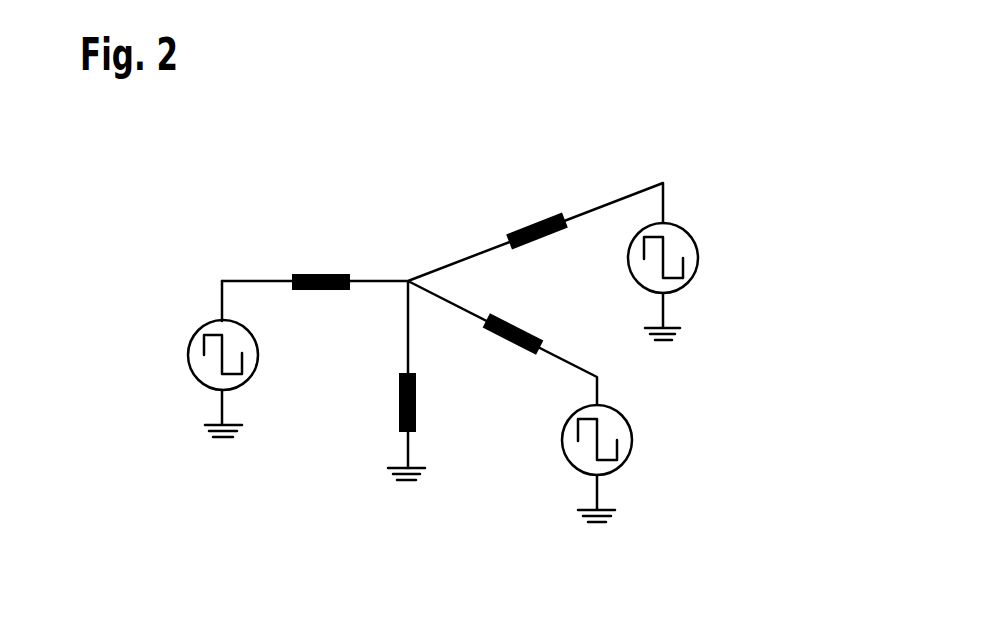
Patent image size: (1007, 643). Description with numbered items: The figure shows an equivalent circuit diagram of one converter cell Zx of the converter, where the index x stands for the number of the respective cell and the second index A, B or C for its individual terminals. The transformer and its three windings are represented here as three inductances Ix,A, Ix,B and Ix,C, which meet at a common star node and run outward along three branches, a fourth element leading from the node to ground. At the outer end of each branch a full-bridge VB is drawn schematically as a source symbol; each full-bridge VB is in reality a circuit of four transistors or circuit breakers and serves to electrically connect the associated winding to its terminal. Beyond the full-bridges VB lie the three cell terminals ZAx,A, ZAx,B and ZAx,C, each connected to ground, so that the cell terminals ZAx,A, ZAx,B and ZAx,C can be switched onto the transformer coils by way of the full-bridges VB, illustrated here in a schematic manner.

The converter cell Zx is at (699, 148).
The inductance Ix,A is at (302, 273).
The inductance Ix,B is at (533, 223).
The inductance Ix,C is at (522, 348).
The full-bridge VB is at (213, 327).
The cell terminal ZAx,A is at (222, 408).
The cell terminal ZAx,B is at (663, 308).
The cell terminal ZAx,C is at (598, 493).